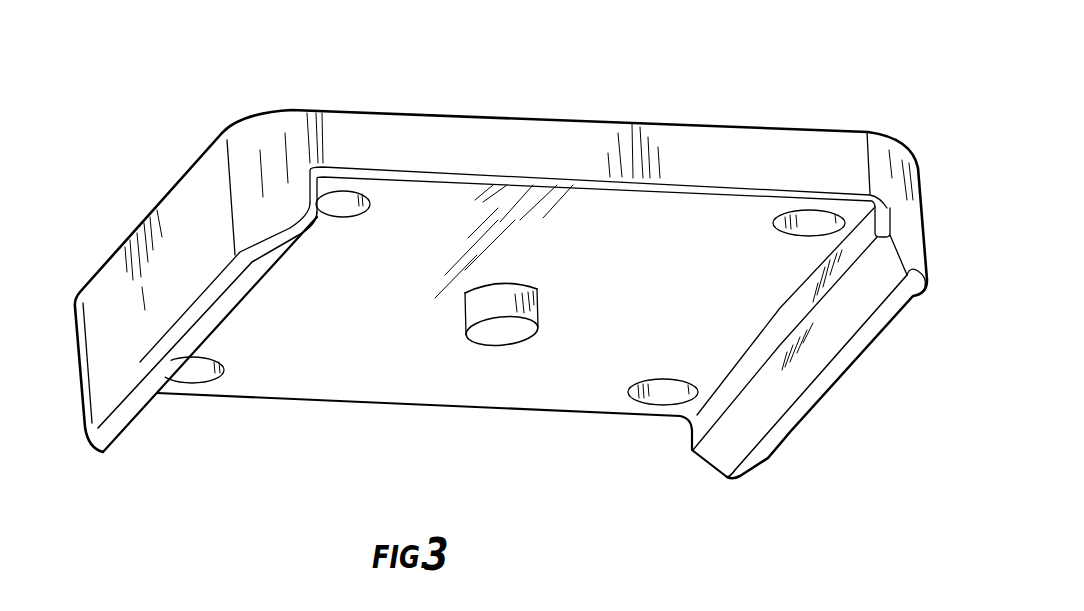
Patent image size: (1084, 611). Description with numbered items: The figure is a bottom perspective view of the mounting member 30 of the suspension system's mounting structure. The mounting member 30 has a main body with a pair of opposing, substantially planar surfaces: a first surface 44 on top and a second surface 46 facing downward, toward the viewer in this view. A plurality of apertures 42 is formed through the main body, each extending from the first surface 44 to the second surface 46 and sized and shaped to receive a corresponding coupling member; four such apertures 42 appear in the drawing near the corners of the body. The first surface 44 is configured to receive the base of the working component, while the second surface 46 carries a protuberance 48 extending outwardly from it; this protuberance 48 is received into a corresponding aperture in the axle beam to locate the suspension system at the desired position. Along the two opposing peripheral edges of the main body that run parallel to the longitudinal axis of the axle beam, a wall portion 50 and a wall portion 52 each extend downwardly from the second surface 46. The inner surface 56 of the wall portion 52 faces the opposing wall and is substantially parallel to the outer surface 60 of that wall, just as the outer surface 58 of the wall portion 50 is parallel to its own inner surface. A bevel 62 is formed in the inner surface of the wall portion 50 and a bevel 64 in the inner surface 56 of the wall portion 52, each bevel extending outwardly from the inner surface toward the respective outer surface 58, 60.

The mounting member 30 is at (134, 152).
The apertures 42 is at (344, 206).
The first surface 44 is at (358, 110).
The second surface 46 is at (348, 357).
The protuberance 48 is at (501, 333).
The wall portion 50 is at (130, 414).
The wall portion 52 is at (790, 433).
The inner surface 56 is at (692, 430).
The outer surface 58 is at (100, 355).
The outer surface 60 is at (925, 221).
The bevel 62 is at (306, 237).
The bevel 64 is at (722, 453).